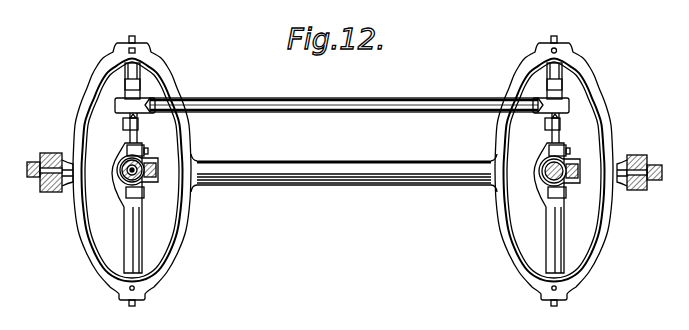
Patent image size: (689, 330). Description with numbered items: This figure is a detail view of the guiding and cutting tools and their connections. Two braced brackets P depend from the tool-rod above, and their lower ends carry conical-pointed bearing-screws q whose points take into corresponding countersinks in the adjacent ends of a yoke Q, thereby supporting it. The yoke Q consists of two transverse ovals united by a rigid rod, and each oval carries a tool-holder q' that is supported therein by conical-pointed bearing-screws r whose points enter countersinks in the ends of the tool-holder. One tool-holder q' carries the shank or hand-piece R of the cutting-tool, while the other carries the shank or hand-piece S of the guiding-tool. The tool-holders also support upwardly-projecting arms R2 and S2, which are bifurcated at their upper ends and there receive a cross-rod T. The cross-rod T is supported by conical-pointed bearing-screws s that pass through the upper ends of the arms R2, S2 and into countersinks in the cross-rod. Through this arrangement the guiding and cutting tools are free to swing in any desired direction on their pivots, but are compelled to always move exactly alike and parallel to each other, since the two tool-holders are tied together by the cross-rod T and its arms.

The conical-pointed bearing-screws r is at (135, 37).
The cross-rod T is at (391, 103).
The yoke Q is at (354, 172).
The conical-pointed bearing-screws q is at (30, 161).
The tool-holder q' is at (347, 168).
The conical-pointed bearing-screws s is at (139, 85).
The upwardly-projecting arm R2 is at (127, 99).
The upwardly-projecting arm S2 is at (563, 97).
The shank or hand-piece of the cutting-tool R is at (146, 160).
The shank or hand-piece of the guiding-tool S is at (542, 168).
The braced brackets P is at (351, 184).